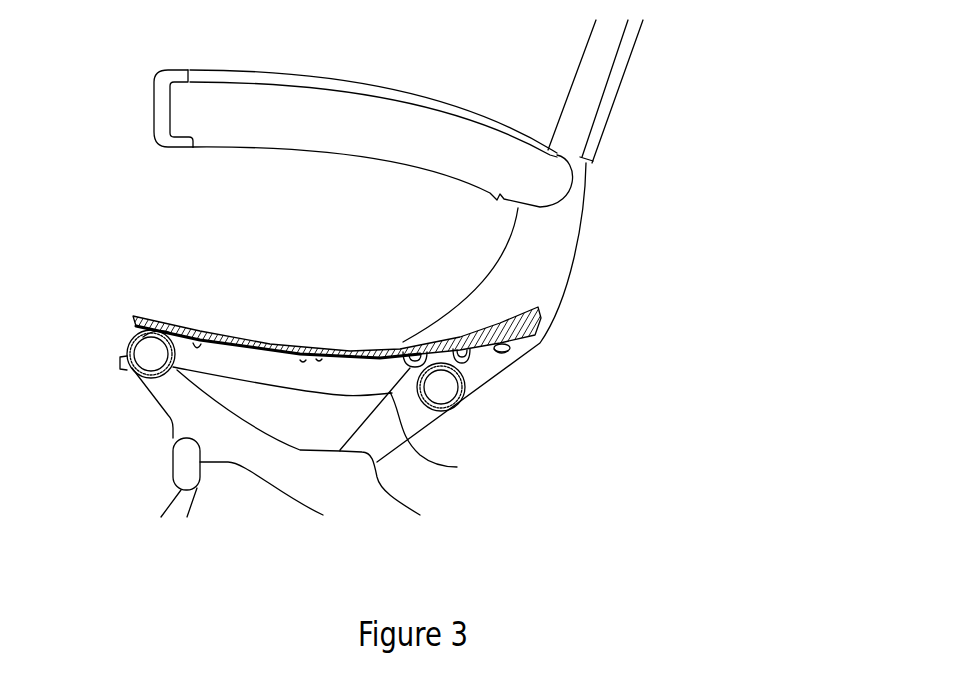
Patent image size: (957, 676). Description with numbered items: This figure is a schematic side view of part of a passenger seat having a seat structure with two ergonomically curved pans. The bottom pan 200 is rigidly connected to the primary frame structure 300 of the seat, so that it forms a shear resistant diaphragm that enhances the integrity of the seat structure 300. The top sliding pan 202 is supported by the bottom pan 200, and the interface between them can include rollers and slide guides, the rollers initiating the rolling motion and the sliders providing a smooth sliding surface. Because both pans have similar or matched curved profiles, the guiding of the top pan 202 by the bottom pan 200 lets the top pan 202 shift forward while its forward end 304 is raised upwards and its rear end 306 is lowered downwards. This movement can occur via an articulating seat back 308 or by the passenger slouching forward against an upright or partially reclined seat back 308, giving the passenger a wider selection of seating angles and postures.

The primary frame structure 300 is at (652, 150).
The articulating seat back 308 is at (570, 112).
The top sliding pan 202 is at (237, 332).
The forward end 304 is at (132, 297).
The rear end 306 is at (502, 313).
The bottom pan 200 is at (483, 351).